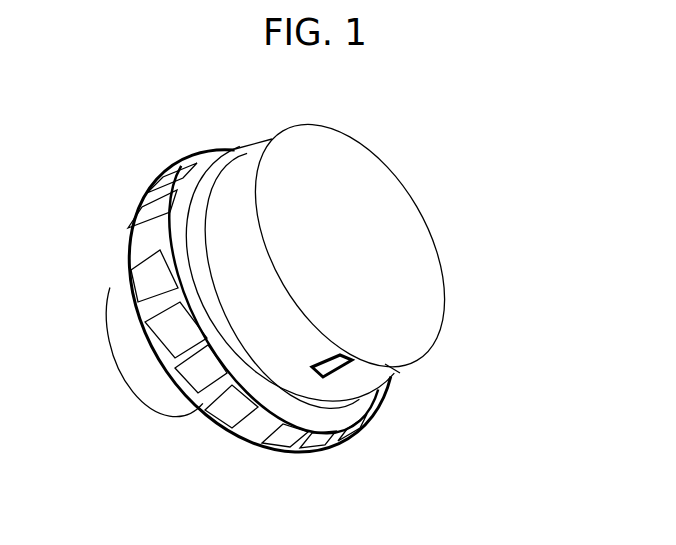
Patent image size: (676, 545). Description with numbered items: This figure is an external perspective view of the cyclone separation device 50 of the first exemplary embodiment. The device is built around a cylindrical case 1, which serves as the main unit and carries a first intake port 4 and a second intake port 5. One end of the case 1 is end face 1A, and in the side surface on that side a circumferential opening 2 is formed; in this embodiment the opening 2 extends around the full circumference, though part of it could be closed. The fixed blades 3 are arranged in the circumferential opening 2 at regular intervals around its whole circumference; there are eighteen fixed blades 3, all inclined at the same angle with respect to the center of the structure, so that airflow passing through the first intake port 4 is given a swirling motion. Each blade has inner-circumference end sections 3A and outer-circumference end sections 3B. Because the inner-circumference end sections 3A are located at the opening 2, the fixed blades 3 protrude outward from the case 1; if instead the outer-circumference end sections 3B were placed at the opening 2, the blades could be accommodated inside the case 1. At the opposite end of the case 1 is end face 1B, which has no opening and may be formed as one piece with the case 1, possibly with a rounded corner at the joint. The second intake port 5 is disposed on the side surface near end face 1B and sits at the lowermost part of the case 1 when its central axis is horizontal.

The cyclone separation device 50 is at (83, 83).
The case 1 is at (340, 305).
The end face 1A is at (223, 386).
The end face 1B is at (365, 268).
The opening 2 is at (185, 165).
The fixed blades 3 is at (157, 277).
The inner-circumference end sections 3A is at (219, 384).
The outer-circumference end sections 3B is at (175, 378).
The first intake port 4 is at (153, 212).
The second intake port 5 is at (352, 362).